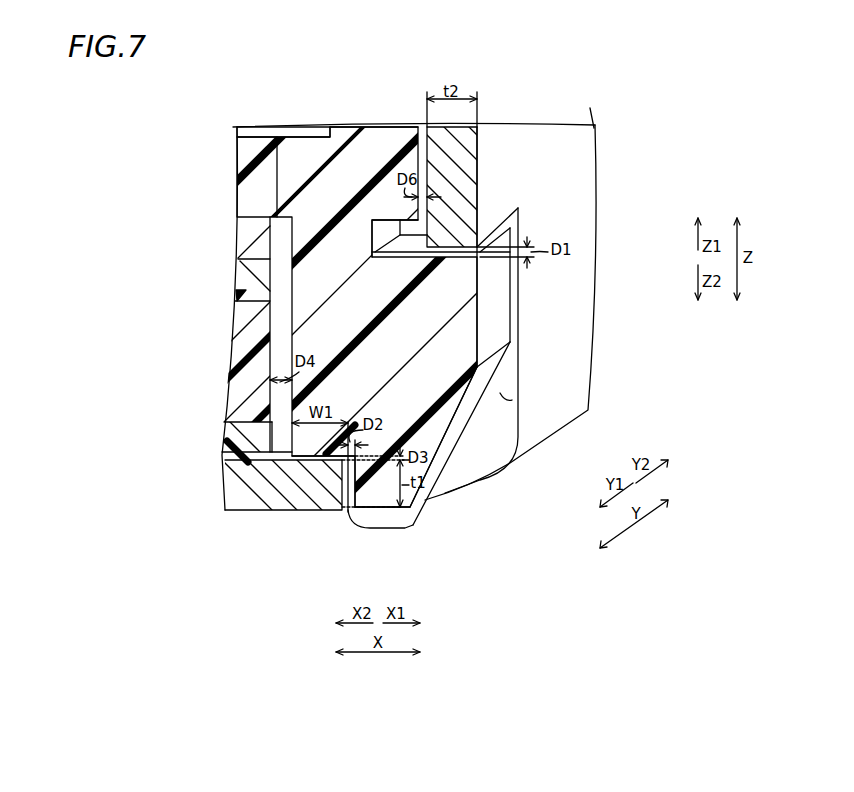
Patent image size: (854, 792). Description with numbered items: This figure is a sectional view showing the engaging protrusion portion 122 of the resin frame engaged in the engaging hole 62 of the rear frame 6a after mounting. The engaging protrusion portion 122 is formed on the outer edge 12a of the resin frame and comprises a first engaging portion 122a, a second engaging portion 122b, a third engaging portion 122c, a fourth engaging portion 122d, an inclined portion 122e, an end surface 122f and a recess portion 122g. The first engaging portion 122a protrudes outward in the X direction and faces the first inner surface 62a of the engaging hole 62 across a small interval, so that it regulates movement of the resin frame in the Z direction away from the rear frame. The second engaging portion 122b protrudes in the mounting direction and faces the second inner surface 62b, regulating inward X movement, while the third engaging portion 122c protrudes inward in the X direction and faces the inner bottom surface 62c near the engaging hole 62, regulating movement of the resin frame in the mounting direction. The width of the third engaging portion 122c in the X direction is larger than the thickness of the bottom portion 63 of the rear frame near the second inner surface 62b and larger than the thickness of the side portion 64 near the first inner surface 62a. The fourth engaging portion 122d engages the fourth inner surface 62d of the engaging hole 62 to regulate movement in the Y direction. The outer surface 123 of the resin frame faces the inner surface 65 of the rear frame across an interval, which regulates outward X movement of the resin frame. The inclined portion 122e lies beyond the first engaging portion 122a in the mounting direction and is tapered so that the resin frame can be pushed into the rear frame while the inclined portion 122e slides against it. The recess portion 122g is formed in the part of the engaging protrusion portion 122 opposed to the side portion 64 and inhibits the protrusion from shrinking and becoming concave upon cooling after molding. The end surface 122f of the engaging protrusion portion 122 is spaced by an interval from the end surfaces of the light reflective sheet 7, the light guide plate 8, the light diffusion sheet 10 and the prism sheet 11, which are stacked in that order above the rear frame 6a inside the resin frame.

The inner surface of housing 6a is at (565, 160).
The engaging protrusion portion 122 is at (405, 128).
The outer edge 12a is at (317, 148).
The end surface 122f is at (268, 128).
The recess portion 122g is at (337, 130).
The inner surface 65 is at (383, 228).
The outer surface 123 is at (427, 127).
The first engaging portion 122a is at (505, 127).
The inclined portion 122e is at (467, 447).
The fourth engaging portion 122d is at (413, 518).
The second engaging portion 122b is at (362, 512).
The third engaging portion 122c is at (320, 470).
The prism sheet 11 is at (260, 242).
The light diffusion sheet 10 is at (258, 283).
The light guide plate 8 is at (248, 352).
The light reflective sheet 7 is at (250, 430).
The inner bottom surface 62c is at (262, 453).
The bottom portion 63 is at (327, 493).
The second inner surface 62b is at (345, 500).
The first inner surface 62a is at (520, 256).
The fourth inner surface 62d is at (512, 400).
The side portion 64 is at (500, 282).
The engaging hole 62 is at (508, 445).